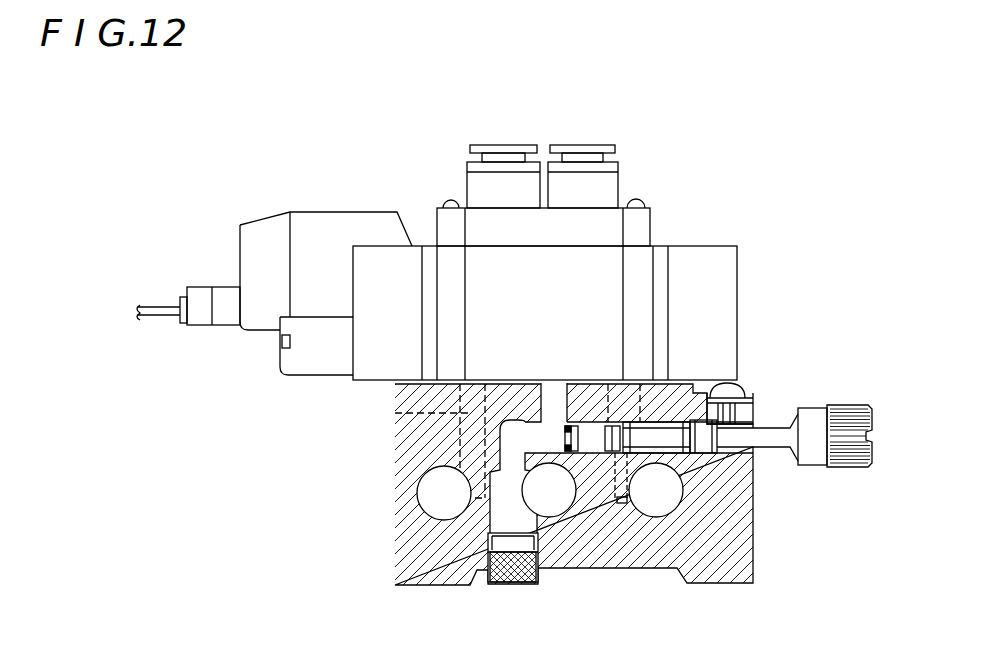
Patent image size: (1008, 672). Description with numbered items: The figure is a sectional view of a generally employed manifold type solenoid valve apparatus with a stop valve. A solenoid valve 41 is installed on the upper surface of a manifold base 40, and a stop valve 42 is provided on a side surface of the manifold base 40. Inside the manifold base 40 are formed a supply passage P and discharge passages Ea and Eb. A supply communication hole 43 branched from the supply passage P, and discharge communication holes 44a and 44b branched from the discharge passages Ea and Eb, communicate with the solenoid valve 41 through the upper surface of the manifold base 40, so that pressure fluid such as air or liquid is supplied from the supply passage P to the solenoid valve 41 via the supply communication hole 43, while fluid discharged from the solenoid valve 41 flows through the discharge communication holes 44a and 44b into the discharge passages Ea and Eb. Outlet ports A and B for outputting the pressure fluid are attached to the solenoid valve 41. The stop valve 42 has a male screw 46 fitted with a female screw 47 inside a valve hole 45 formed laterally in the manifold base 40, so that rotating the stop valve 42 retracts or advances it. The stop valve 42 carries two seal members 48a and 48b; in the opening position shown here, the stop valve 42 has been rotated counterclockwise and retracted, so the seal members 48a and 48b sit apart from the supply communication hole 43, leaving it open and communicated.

The manifold base 40 is at (724, 572).
The solenoid valve 41 is at (707, 252).
The stop valve 42 is at (850, 412).
The supply communication hole 43 is at (553, 383).
The discharge communication hole 44a is at (395, 413).
The discharge communication hole 44b is at (630, 378).
The valve hole 45 is at (601, 455).
The male screw 46 is at (705, 437).
The female screw 47 is at (724, 440).
The seal member 48a is at (584, 455).
The seal member 48b is at (624, 505).
The outlet port A is at (505, 144).
The outlet port B is at (591, 144).
The supply passage P is at (537, 505).
The discharge passage Ea is at (428, 507).
The discharge passage Eb is at (640, 505).